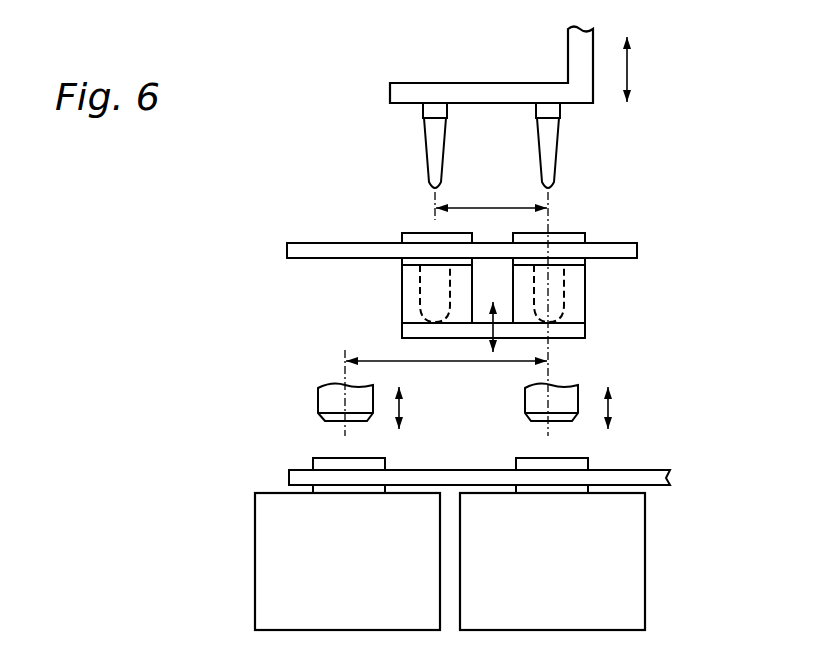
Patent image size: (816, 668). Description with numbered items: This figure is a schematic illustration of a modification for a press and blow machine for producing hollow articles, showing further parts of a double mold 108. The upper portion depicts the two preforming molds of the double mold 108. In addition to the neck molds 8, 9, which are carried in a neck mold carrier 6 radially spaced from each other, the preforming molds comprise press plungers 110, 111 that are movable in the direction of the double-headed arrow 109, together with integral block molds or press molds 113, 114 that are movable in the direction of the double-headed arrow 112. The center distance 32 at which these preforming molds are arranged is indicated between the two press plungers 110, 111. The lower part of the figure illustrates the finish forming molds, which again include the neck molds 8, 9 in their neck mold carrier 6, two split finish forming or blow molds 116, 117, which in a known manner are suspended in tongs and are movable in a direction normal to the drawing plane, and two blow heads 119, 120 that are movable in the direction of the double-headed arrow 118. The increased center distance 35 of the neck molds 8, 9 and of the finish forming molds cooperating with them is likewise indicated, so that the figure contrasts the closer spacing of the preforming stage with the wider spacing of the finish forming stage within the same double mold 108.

The double mold 108 is at (233, 172).
The double-headed arrow 109 is at (631, 66).
The press plunger 110 is at (556, 158).
The press plunger 111 is at (424, 160).
The center distance 32 is at (473, 207).
The neck mold carrier 6 is at (639, 242).
The neck mold 9 is at (401, 232).
The neck mold 8 is at (586, 232).
The block mold 114 is at (402, 314).
The block mold 113 is at (585, 313).
The double-headed arrow 112 is at (490, 330).
The increased center distance 35 is at (444, 363).
The blow head 120 is at (318, 400).
The blow head 119 is at (525, 410).
The double-headed arrow 118 is at (401, 407).
The blow mold 117 is at (255, 627).
The blow mold 116 is at (645, 602).